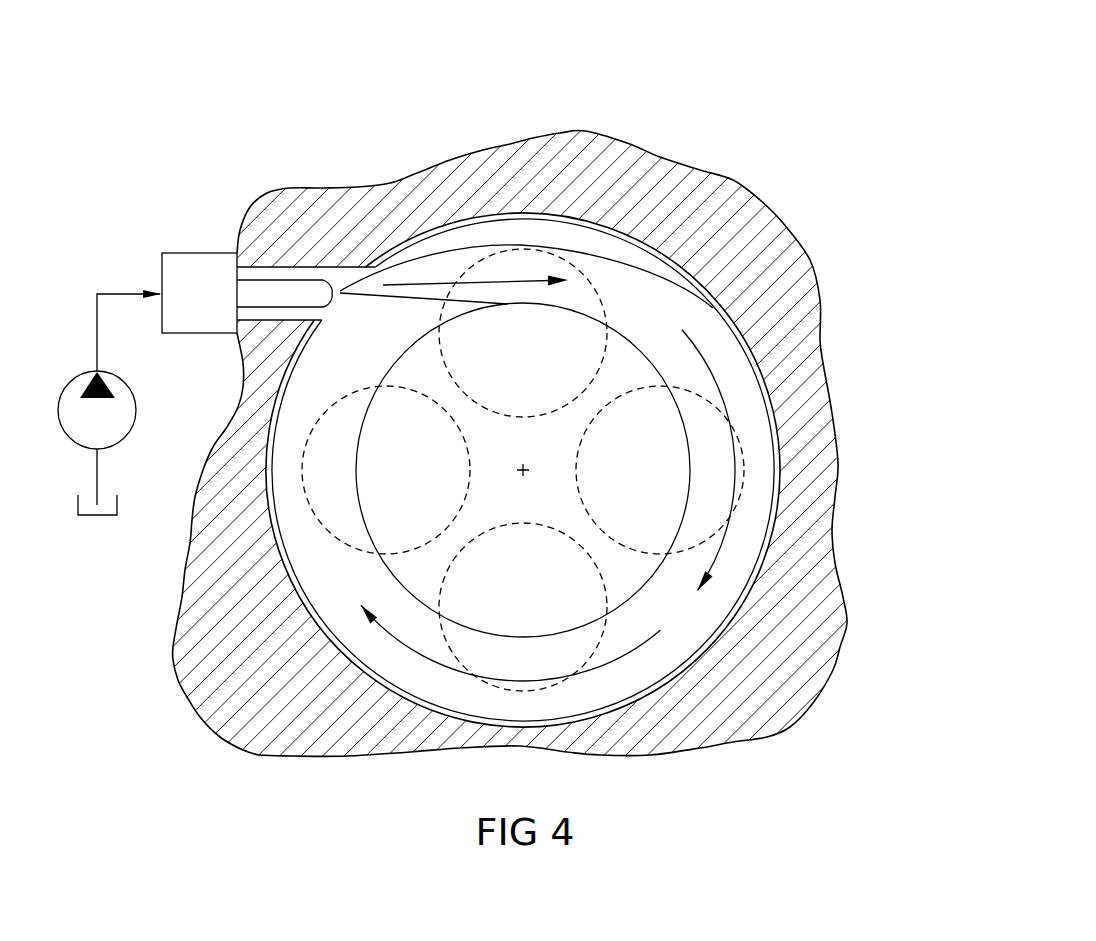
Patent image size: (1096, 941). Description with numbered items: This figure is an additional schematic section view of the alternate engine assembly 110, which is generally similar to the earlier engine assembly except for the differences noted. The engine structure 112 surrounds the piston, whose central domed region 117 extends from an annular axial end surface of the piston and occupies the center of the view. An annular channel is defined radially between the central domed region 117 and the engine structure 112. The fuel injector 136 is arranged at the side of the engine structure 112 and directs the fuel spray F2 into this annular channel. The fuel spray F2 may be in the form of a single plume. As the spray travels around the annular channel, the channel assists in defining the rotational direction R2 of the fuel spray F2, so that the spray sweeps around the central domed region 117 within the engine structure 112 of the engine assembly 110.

The engine assembly 110 is at (772, 115).
The engine structure 112 is at (820, 297).
The central domed region 117 is at (543, 453).
The fuel injector 136 is at (200, 253).
The fuel spray F2 is at (600, 248).
The rotational direction R2 is at (523, 680).